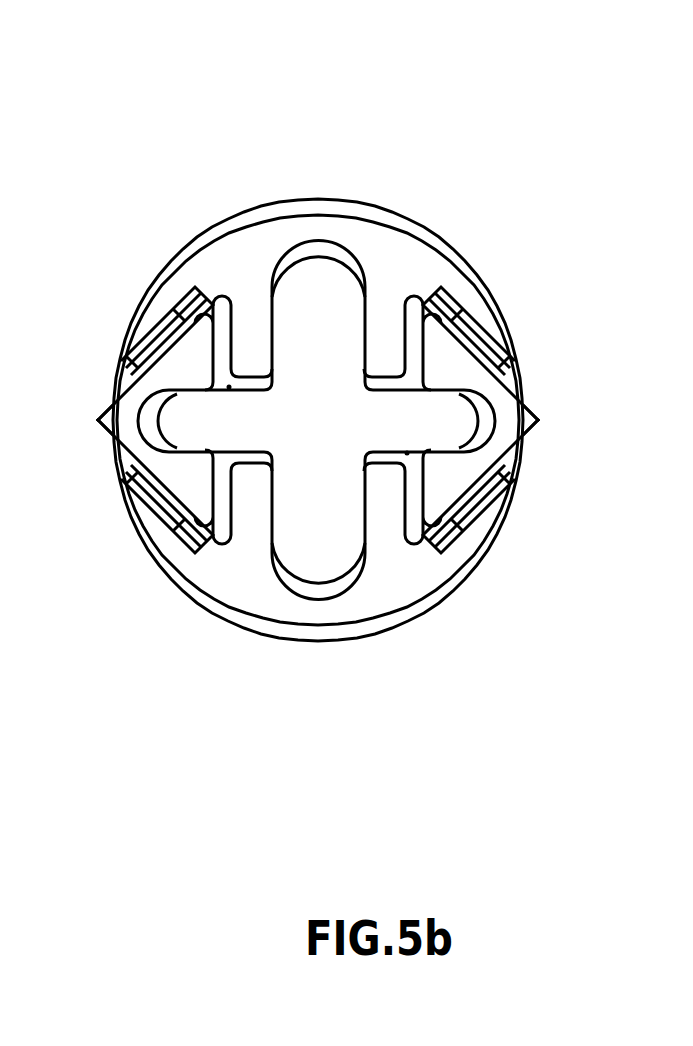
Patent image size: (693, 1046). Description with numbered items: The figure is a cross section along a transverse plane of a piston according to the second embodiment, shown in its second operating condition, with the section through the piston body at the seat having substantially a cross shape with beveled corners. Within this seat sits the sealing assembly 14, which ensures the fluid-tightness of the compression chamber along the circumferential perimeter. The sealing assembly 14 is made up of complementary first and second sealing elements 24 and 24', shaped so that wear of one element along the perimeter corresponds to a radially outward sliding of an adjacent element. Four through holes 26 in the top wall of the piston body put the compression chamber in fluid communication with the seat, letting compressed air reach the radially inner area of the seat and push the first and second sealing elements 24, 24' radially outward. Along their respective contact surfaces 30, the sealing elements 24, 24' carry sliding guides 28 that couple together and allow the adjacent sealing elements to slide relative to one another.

The sealing assembly 14 is at (480, 246).
The first sealing element 24 is at (336, 420).
The second sealing element 24' is at (298, 387).
The through holes 26 is at (229, 386).
The sliding guides 28 is at (487, 323).
The contact surfaces 30 is at (515, 333).